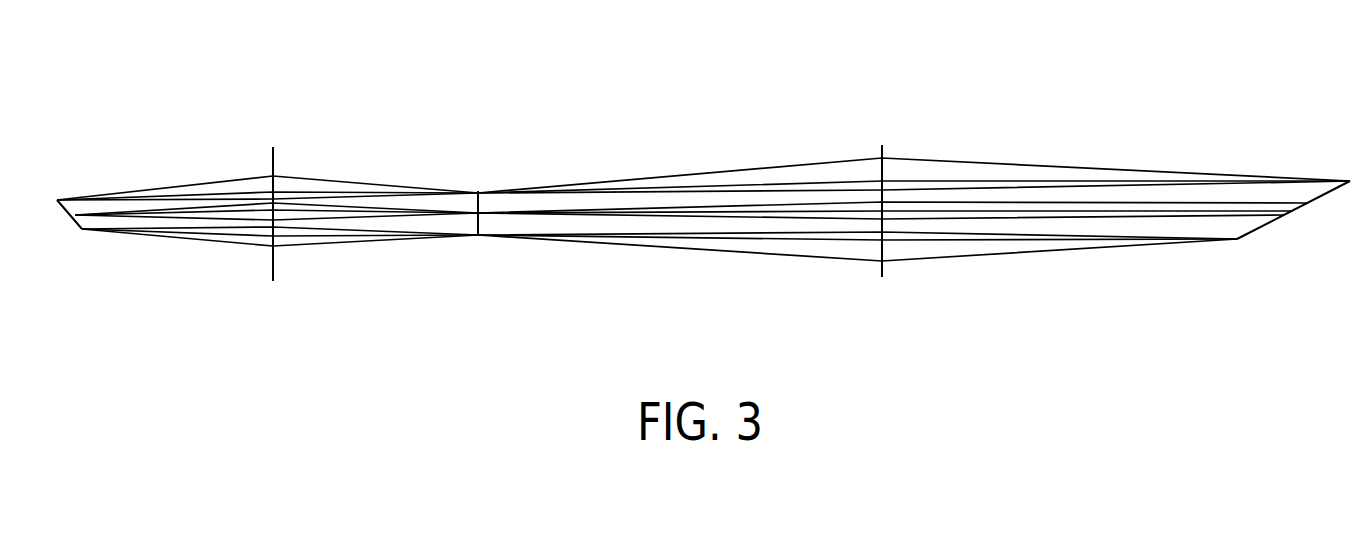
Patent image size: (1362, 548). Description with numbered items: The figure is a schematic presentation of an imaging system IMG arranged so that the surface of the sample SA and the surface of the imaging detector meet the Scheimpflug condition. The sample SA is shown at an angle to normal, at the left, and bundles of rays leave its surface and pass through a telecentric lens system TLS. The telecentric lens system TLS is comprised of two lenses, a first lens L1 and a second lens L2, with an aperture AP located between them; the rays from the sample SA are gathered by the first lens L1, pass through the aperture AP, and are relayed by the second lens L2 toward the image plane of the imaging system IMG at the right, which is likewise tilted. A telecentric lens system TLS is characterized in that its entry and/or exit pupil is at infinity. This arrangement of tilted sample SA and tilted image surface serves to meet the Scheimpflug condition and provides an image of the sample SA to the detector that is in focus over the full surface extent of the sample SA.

The sample SA is at (68, 236).
The telecentric lens system TLS is at (578, 170).
The lens L1 is at (274, 236).
The aperture AP is at (477, 237).
The lens L2 is at (882, 235).
The imaging system IMG is at (1277, 247).